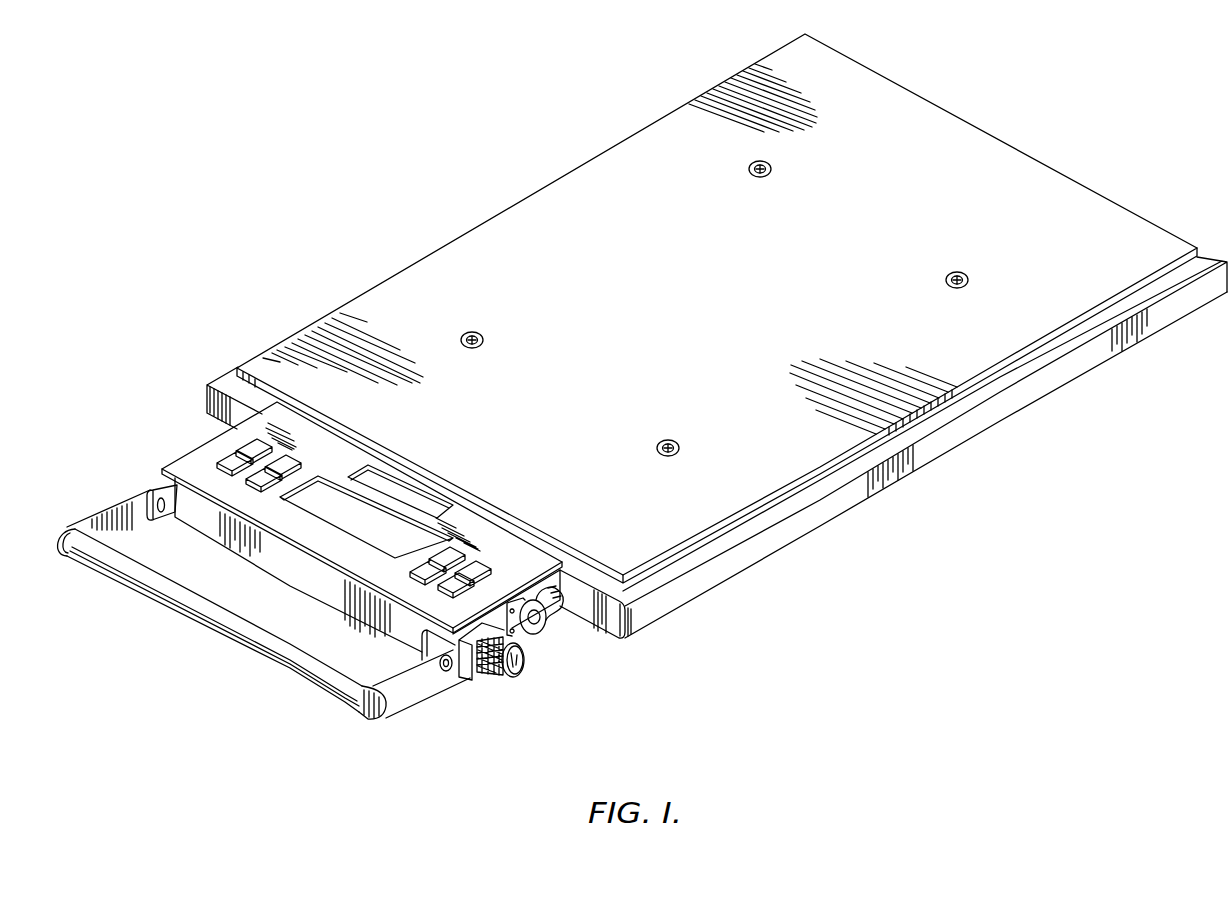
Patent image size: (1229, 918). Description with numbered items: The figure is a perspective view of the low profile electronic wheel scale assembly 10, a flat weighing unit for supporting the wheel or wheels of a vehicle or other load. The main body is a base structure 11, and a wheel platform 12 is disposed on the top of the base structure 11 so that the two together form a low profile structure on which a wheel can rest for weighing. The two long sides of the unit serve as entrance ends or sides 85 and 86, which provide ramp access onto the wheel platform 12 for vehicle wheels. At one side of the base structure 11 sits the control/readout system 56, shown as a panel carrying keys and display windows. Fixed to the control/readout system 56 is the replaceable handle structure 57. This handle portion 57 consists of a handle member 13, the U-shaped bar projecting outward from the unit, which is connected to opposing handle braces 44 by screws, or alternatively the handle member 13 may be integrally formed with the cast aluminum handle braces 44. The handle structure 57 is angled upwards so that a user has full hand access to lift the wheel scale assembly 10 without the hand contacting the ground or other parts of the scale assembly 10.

The low profile electronic wheel scale assembly 10 is at (302, 135).
The base structure 11 is at (655, 607).
The wheel platform 12 is at (497, 277).
The handle member 13 is at (196, 602).
The handle braces 44 is at (425, 685).
The control/readout system 56 is at (205, 432).
The handle portion 57 is at (212, 672).
The entrance end 85 is at (513, 185).
The entrance end 86 is at (965, 463).